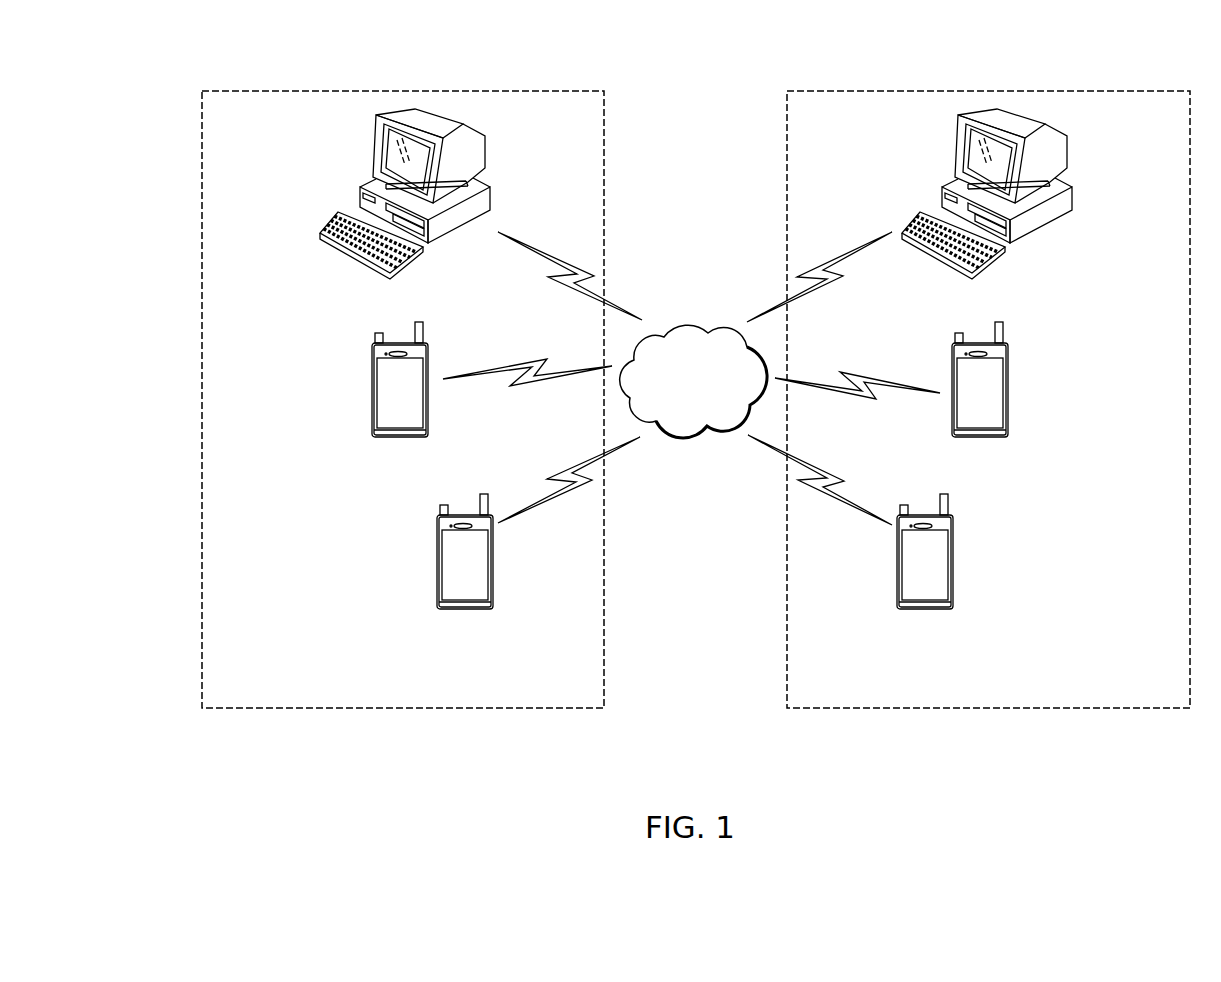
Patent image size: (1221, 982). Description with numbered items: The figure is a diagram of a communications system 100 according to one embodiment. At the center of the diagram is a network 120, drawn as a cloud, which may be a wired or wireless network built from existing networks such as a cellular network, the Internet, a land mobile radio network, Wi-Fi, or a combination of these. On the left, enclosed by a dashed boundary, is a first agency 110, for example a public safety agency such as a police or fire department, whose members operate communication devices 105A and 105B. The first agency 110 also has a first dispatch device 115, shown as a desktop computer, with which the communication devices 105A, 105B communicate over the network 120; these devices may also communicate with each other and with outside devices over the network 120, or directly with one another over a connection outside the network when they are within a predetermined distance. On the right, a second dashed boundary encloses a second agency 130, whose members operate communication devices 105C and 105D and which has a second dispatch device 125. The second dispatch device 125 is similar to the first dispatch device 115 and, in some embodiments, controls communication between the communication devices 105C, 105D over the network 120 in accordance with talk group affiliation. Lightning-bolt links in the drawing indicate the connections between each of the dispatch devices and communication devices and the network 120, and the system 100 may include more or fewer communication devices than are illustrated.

The communication system 100 is at (160, 75).
The first agency 110 is at (402, 710).
The second agency 130 is at (985, 710).
The first dispatch device 115 is at (341, 252).
The second dispatch device 125 is at (1040, 228).
The communication device 105A is at (372, 437).
The communication device 105B is at (437, 609).
The communication device 105C is at (953, 609).
The communication device 105D is at (1008, 437).
The network 120 is at (703, 410).